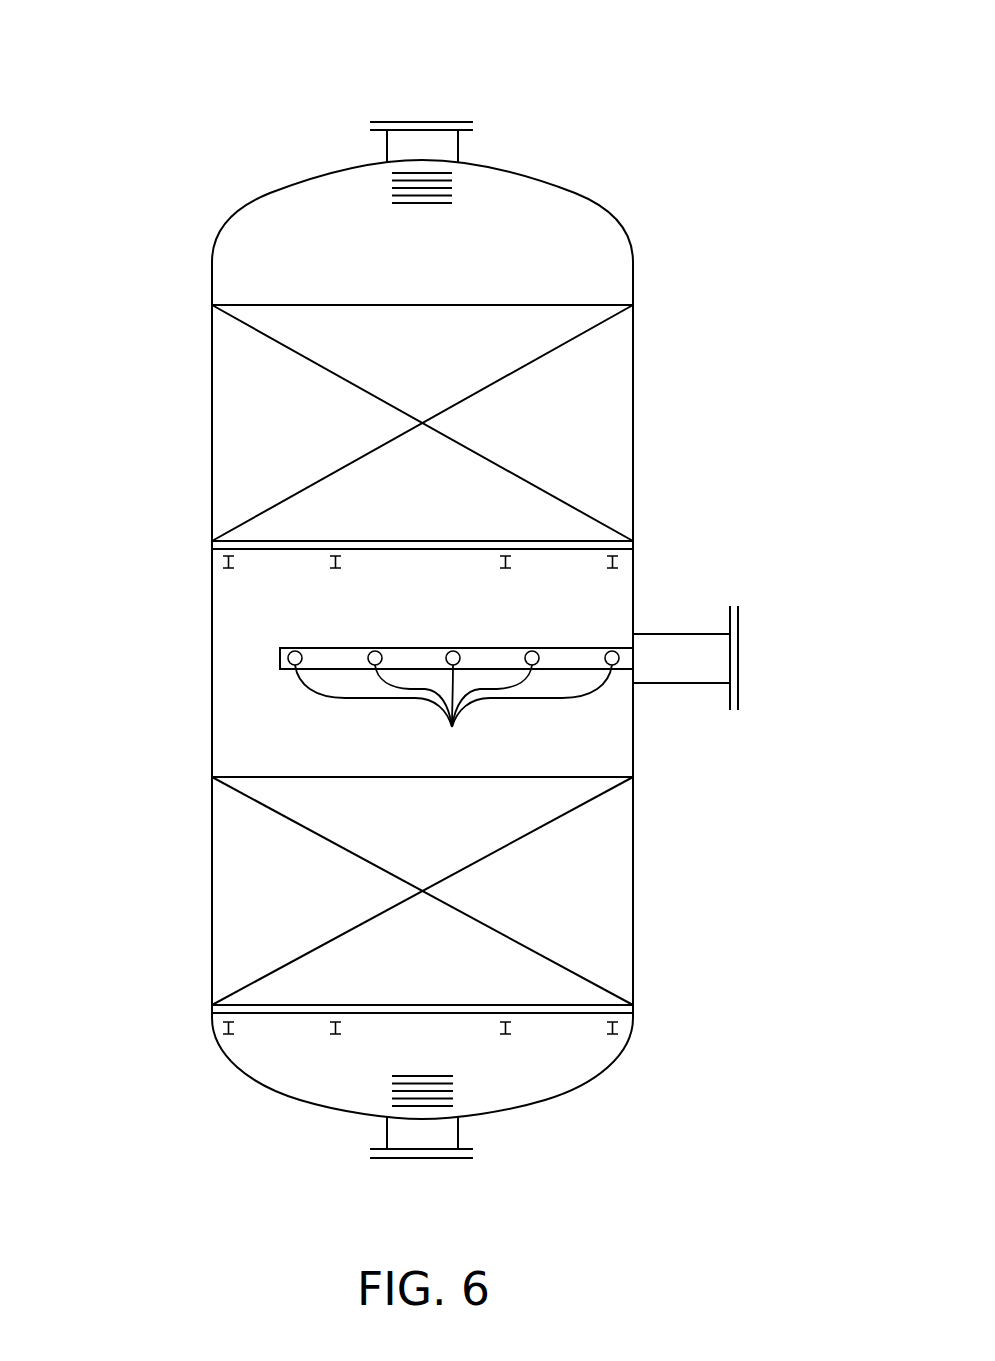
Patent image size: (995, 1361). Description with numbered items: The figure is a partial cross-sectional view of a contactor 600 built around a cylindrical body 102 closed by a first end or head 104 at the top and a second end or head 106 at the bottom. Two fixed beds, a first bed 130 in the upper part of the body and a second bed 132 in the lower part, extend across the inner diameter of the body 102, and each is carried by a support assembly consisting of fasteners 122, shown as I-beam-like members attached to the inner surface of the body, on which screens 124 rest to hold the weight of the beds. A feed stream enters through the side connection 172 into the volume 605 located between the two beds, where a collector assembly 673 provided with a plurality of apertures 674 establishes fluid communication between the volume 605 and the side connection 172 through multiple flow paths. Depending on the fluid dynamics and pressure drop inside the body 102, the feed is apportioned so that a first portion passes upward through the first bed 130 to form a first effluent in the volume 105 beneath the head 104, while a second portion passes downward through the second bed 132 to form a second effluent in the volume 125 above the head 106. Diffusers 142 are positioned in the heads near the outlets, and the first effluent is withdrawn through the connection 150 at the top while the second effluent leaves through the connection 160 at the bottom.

The contactor 600 is at (466, 604).
The body 102 is at (634, 351).
The first end or head 104 is at (632, 245).
The volume 105 is at (265, 227).
The second end or head 106 is at (633, 1032).
The volume 125 is at (312, 1088).
The connection 150 is at (427, 120).
The connection 160 is at (450, 1159).
The diffusers 142 is at (438, 205).
The first bed 130 is at (604, 420).
The second bed 132 is at (604, 898).
The screens 124 is at (218, 546).
The fasteners 122 is at (227, 562).
The volume 605 is at (240, 686).
The collector assembly 673 is at (414, 647).
The apertures 674 is at (453, 719).
The side connection 172 is at (679, 685).